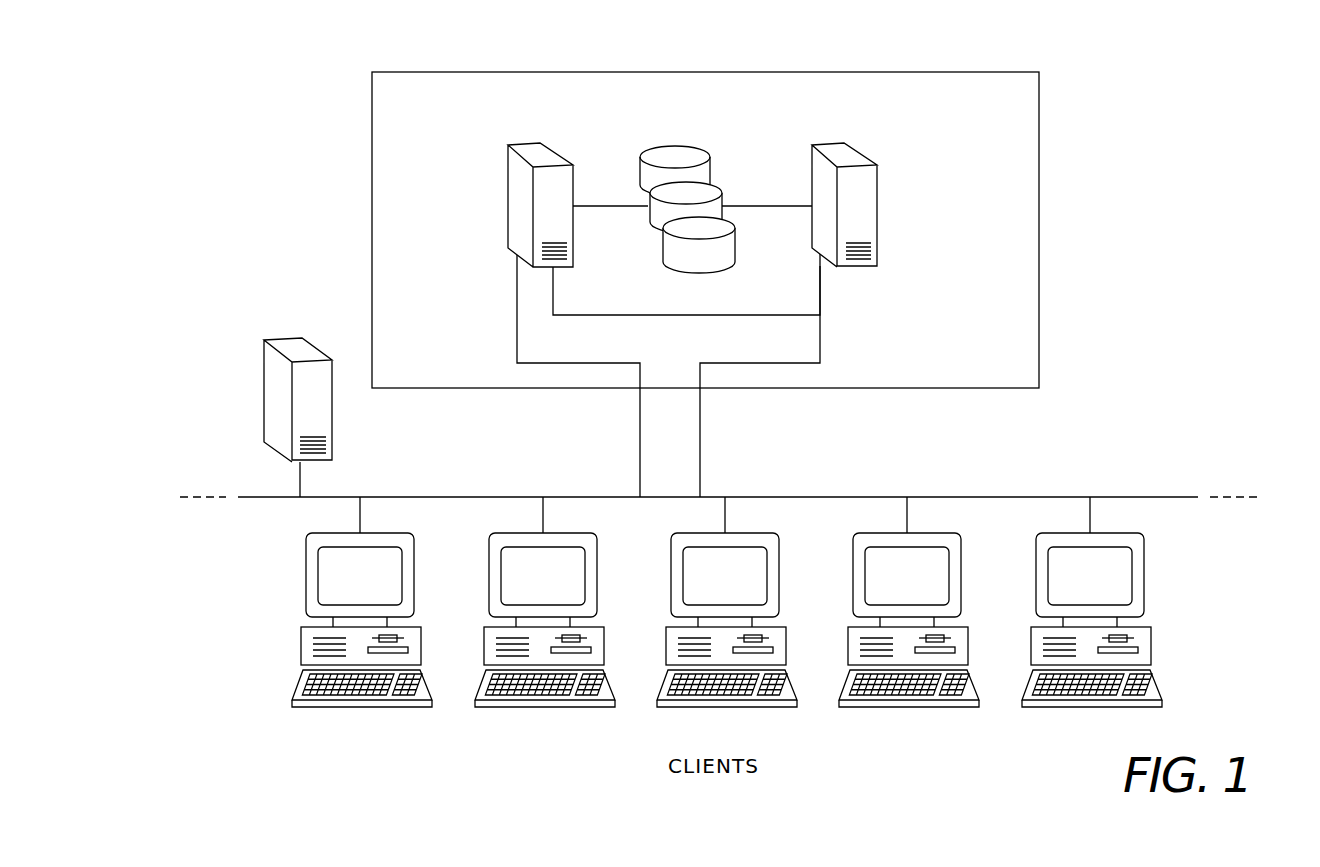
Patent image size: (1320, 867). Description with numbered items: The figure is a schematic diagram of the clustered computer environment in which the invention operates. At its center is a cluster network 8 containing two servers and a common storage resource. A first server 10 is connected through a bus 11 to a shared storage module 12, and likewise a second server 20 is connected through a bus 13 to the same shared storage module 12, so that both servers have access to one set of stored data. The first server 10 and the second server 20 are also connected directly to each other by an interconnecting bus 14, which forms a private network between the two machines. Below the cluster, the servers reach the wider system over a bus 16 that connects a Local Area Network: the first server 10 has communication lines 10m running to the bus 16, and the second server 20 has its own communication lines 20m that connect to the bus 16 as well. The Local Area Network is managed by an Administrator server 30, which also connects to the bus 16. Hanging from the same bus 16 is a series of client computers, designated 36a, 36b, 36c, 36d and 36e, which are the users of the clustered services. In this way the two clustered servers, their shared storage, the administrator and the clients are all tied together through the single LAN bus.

The cluster network 8 is at (480, 72).
The first server 10 is at (542, 143).
The second server 20 is at (847, 143).
The bus 11 is at (590, 205).
The bus 13 is at (747, 205).
The shared storage module 12 is at (673, 143).
The interconnecting bus 14 is at (628, 313).
The communication lines 10m is at (640, 413).
The communication lines 20m is at (700, 424).
The Administrator server 30 is at (285, 338).
The bus 16 is at (980, 495).
The client computer 36a is at (362, 625).
The client computer 36b is at (545, 625).
The client computer 36c is at (727, 625).
The client computer 36d is at (909, 625).
The client computer 36e is at (1092, 625).